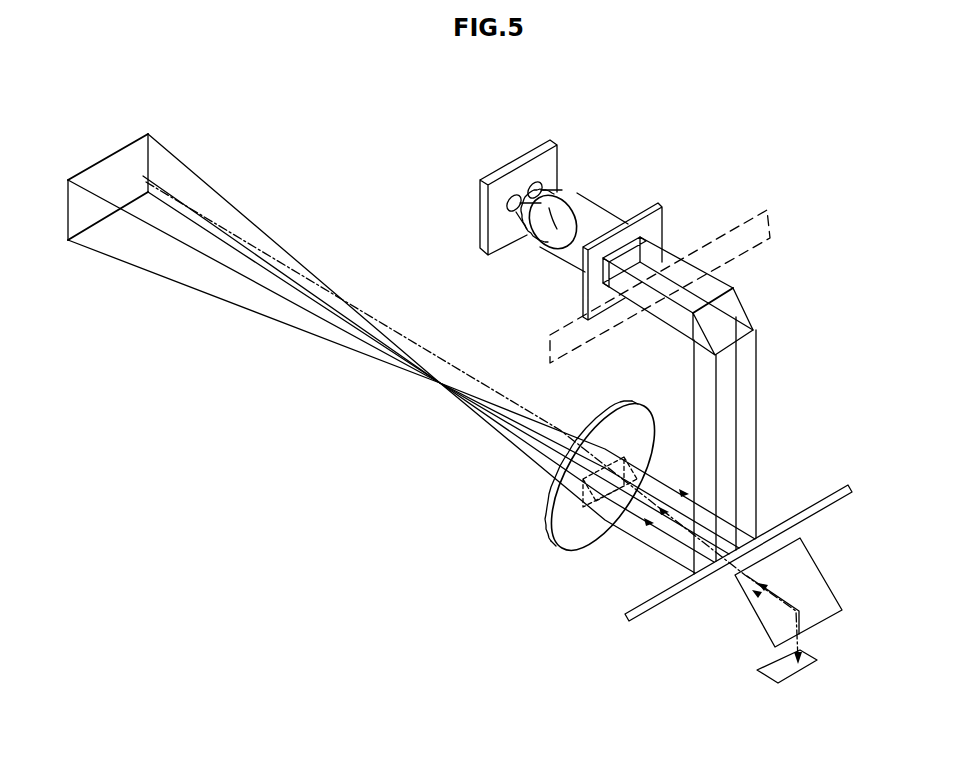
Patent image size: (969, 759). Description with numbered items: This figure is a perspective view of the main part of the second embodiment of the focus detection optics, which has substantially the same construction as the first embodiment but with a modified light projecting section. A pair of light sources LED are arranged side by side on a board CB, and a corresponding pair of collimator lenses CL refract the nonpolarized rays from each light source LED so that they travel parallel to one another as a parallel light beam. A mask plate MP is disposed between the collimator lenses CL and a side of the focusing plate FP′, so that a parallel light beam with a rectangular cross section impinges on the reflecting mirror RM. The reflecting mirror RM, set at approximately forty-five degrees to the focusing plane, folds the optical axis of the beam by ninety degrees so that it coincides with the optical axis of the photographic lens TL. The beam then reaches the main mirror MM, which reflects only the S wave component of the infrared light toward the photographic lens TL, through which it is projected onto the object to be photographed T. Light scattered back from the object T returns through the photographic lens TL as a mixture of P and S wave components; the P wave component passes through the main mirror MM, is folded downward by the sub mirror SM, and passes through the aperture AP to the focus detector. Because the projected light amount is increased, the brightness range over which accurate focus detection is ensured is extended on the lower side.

The object to be photographed T is at (130, 142).
The photographic lens TL is at (565, 548).
The circuit board CB is at (525, 158).
The light source LED is at (531, 184).
The collimator lens CL is at (577, 192).
The mask plate MP is at (660, 205).
The focusing plate FP′ is at (771, 209).
The reflecting mirror RM is at (752, 297).
The main mirror MM is at (850, 484).
The sub mirror SM is at (812, 575).
The aperture AP is at (817, 660).